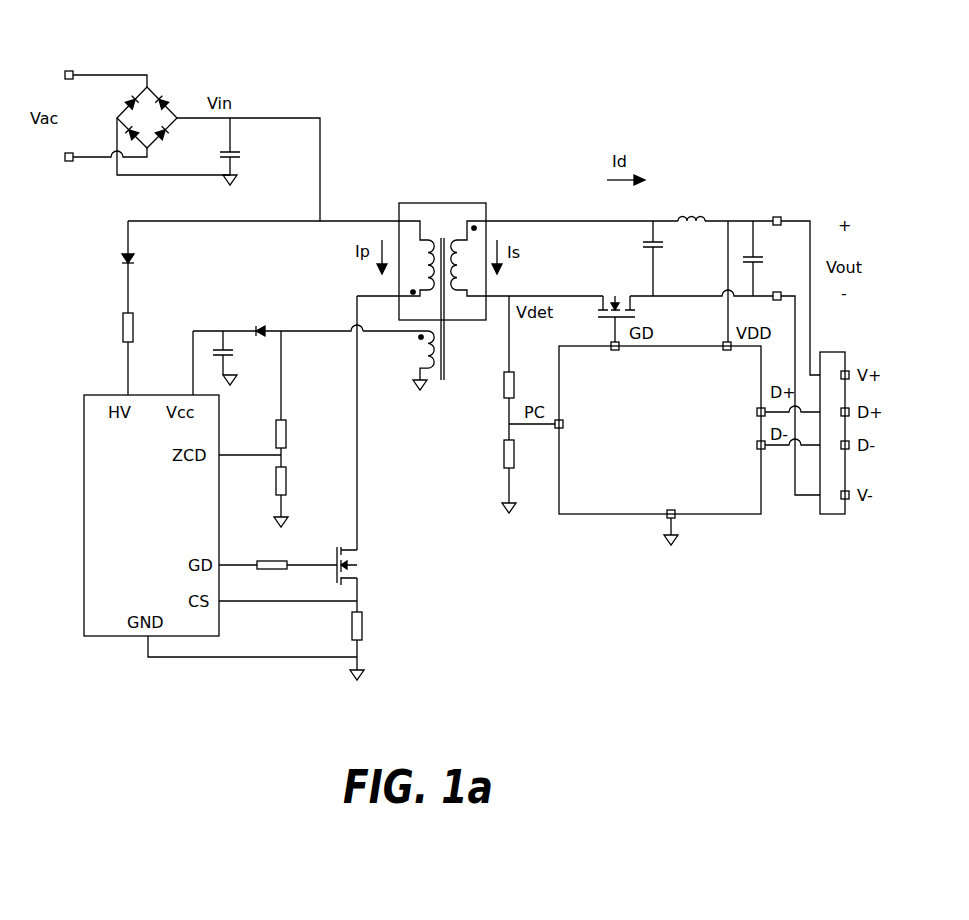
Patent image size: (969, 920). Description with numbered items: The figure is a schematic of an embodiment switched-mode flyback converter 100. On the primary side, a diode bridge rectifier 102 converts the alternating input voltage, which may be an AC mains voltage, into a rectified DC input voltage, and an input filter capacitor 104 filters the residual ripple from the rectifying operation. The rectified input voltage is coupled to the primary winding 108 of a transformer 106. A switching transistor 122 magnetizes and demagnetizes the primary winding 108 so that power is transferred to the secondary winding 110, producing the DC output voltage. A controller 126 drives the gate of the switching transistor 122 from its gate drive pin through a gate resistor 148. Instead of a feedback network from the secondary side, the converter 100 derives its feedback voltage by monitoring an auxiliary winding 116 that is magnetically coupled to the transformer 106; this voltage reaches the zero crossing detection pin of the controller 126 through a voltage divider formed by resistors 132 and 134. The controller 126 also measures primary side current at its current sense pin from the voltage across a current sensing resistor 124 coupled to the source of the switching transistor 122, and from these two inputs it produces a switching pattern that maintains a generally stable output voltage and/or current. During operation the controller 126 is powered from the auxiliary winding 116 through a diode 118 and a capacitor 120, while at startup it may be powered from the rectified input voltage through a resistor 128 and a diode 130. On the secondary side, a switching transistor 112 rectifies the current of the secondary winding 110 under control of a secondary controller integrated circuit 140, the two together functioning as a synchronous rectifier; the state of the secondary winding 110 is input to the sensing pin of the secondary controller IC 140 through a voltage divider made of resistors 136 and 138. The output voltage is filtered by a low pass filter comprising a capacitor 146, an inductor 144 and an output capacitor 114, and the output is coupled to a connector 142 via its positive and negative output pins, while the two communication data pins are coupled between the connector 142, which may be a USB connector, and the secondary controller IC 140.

The switched-mode flyback converter 100 is at (116, 46).
The diode bridge rectifier 102 is at (166, 100).
The input filter capacitor 104 is at (218, 154).
The transformer 106 is at (436, 203).
The primary winding 108 is at (428, 266).
The secondary winding 110 is at (456, 258).
The switching transistor 112 is at (618, 296).
The output capacitor 114 is at (758, 263).
The auxiliary winding 116 is at (427, 367).
The diode 118 is at (264, 331).
The capacitor 120 is at (224, 355).
The switching transistor 122 is at (357, 568).
The current sensing resistor 124 is at (362, 626).
The controller 126 is at (133, 581).
The resistor 128 is at (133, 328).
The diode 130 is at (131, 258).
The resistor 132 is at (286, 434).
The resistor 134 is at (286, 490).
The resistor 136 is at (505, 382).
The resistor 138 is at (505, 452).
The secondary controller integrated circuit 140 is at (624, 503).
The connector 142 is at (828, 352).
The inductor 144 is at (696, 215).
The capacitor 146 is at (660, 248).
The gate resistor 148 is at (276, 561).